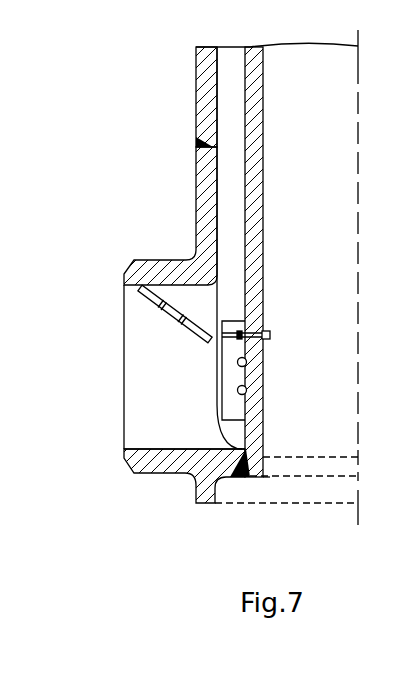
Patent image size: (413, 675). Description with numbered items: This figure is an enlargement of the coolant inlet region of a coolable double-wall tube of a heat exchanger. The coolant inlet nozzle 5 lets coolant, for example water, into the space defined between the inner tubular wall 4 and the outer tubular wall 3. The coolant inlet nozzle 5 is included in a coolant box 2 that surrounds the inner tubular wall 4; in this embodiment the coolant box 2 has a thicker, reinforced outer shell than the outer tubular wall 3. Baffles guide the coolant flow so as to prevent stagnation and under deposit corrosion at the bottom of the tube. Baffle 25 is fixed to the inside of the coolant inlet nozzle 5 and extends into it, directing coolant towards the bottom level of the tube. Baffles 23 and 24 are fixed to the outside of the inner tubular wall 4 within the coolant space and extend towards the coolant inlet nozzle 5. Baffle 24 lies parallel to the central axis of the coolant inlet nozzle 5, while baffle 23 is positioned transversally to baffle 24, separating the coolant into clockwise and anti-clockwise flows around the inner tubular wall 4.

The coolant box 2 is at (207, 218).
The outer tubular wall 3 is at (203, 92).
The inner tubular wall 4 is at (255, 260).
The coolant inlet nozzle 5 is at (137, 428).
The baffle 23 is at (233, 400).
The baffle 24 is at (240, 334).
The baffle 25 is at (148, 296).